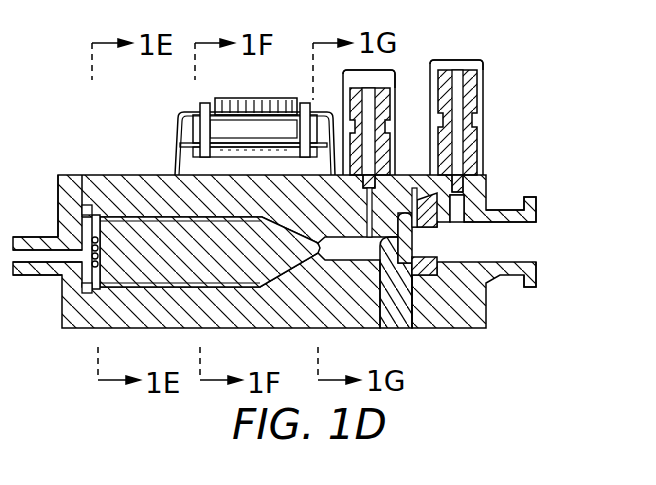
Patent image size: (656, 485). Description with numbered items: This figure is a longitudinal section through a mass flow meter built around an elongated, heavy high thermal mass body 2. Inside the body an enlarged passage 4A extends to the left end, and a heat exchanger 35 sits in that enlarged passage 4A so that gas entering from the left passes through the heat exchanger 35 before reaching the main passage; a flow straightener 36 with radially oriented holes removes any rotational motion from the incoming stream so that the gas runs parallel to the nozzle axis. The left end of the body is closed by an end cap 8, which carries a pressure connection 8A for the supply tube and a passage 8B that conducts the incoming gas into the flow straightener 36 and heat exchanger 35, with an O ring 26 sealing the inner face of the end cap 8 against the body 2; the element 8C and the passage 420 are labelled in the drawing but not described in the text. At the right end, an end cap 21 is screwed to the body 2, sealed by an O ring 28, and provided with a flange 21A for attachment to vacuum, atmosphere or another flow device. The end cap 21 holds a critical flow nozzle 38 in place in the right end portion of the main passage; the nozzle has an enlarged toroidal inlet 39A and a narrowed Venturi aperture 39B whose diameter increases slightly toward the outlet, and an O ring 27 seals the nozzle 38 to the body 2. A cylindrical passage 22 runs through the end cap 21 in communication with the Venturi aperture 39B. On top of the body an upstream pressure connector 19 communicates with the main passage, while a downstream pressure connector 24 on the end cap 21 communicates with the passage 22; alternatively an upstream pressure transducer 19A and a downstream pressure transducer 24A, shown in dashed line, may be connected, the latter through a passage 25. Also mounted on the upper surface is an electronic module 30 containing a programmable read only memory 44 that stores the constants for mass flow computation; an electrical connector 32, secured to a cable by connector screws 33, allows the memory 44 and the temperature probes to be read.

The high thermal mass body 2 is at (144, 176).
The enlarged passage 4A is at (250, 278).
The end cap 8 is at (68, 176).
The pressure connection 8A is at (36, 237).
The passage 8B is at (16, 263).
The seal rings 8C is at (110, 205).
The upstream pressure connector 19 is at (393, 109).
The upstream pressure transducer 19A is at (395, 81).
The end cap 21 is at (466, 329).
The flange 21A is at (531, 289).
The cylindrical passage 22 is at (523, 228).
The downstream pressure connector 24 is at (478, 101).
The downstream pressure transducer 24A is at (484, 68).
The passage 25 is at (465, 222).
The O ring 26 is at (90, 206).
The O ring 27 is at (413, 300).
The O ring 28 is at (411, 190).
The electronic module 30 is at (178, 136).
The electrical connector 32 is at (238, 97).
The cable connector screws 33 is at (204, 101).
The heat exchanger 35 is at (170, 278).
The flow straightener 36 is at (62, 268).
The critical flow nozzle 38 is at (437, 266).
The enlarged toroidal inlet 39A is at (407, 262).
The Venturi aperture 39B is at (413, 246).
The programmable read only memory 44 is at (236, 150).
The flow passage 420 is at (365, 236).